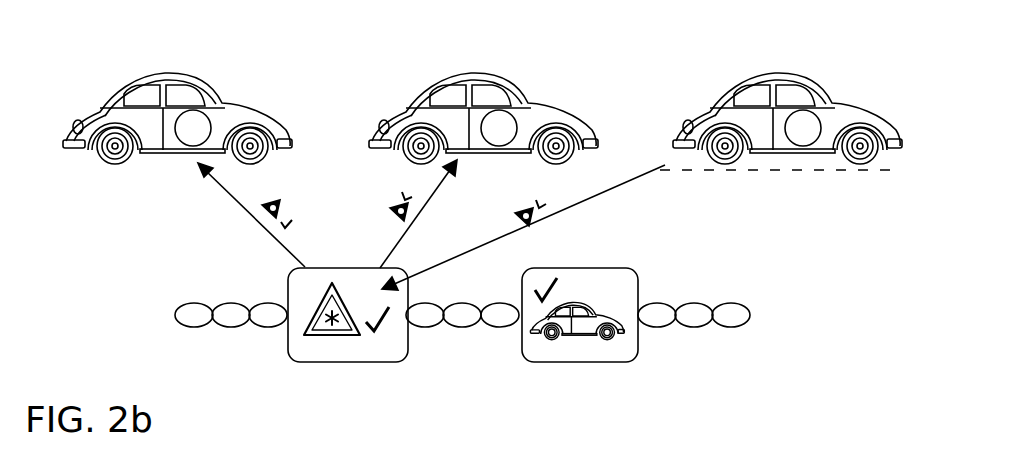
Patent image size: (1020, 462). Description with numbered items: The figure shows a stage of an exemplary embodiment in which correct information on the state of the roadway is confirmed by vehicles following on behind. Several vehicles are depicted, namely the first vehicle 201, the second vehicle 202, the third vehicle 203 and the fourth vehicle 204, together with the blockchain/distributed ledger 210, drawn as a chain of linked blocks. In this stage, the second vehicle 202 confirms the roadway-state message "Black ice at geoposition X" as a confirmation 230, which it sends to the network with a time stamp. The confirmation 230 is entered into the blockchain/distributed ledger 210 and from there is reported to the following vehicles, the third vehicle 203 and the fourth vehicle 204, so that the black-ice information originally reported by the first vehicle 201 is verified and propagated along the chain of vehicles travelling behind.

The vehicle 1 201 is at (585, 335).
The vehicle 2 202 is at (779, 76).
The vehicle 3 203 is at (470, 75).
The vehicle 4 204 is at (159, 74).
The blockchain/distributed ledger 210 is at (741, 315).
The confirmation 230 is at (226, 232).